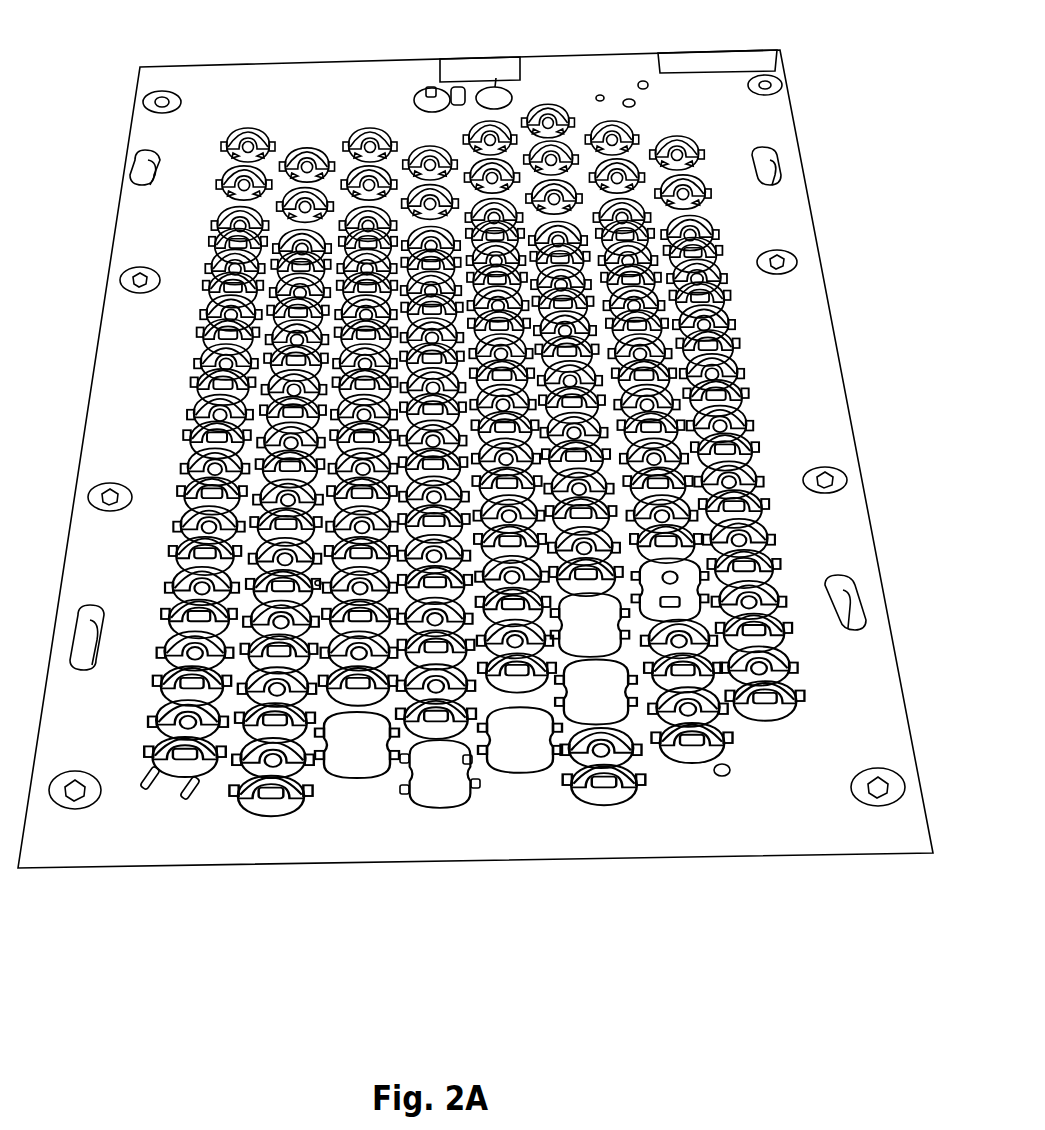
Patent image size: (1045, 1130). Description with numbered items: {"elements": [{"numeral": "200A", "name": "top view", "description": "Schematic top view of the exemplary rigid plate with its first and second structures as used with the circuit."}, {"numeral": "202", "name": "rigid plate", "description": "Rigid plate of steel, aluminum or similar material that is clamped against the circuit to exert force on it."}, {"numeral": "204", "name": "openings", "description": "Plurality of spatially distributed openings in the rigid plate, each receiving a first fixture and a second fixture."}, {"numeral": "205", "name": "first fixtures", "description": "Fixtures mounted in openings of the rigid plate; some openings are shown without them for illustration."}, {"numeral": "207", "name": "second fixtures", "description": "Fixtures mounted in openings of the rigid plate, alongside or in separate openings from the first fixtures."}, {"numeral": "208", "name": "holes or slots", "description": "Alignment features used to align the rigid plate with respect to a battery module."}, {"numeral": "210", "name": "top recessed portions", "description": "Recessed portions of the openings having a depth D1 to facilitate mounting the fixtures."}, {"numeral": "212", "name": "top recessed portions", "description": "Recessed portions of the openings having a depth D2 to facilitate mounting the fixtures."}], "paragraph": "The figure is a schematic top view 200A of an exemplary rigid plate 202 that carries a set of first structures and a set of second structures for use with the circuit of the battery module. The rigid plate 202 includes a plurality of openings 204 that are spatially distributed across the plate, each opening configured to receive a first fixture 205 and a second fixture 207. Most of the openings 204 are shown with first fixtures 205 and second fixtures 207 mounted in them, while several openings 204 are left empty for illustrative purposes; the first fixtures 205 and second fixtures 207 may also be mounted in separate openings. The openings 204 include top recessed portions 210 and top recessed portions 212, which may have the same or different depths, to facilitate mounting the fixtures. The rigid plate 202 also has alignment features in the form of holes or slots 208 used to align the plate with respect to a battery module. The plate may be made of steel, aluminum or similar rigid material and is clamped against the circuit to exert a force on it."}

The pre-populated circuit board assembly 200A is at (475, 485).
The circuit board / substrate 202 is at (475, 459).
The connector component 204 is at (437, 792).
The electronic component 205 is at (628, 782).
The electronic component 207 is at (638, 750).
The component 208 is at (496, 88).
The unpopulated component sites 210 is at (398, 760).
The pins 212 is at (400, 760).